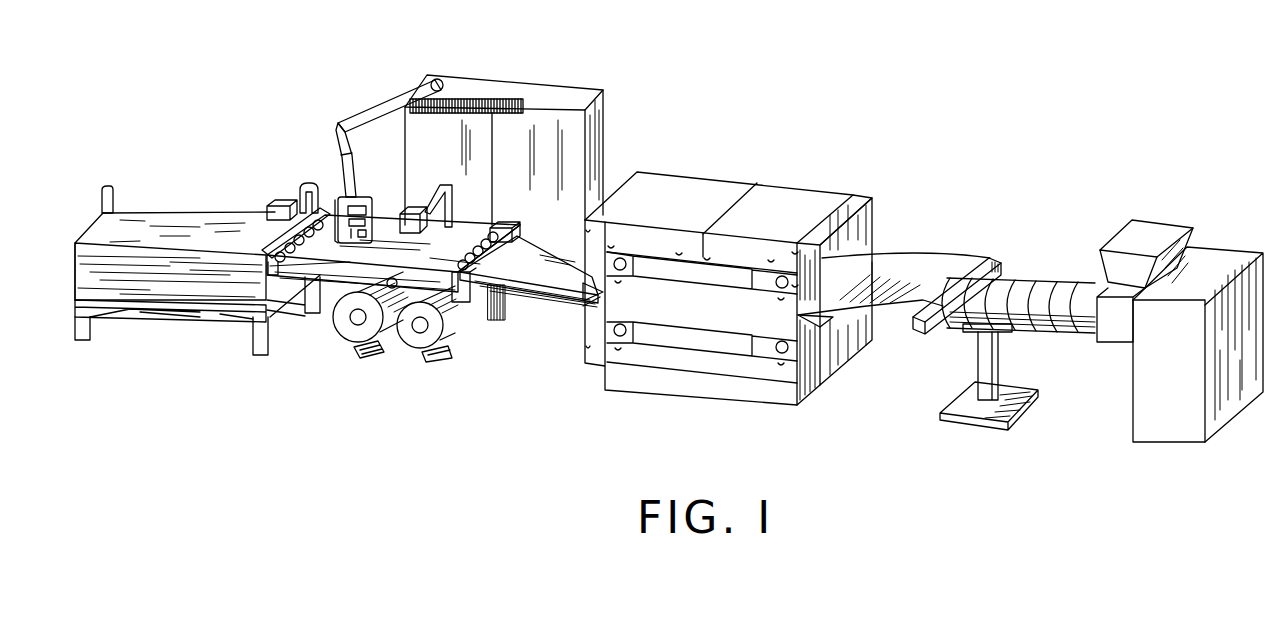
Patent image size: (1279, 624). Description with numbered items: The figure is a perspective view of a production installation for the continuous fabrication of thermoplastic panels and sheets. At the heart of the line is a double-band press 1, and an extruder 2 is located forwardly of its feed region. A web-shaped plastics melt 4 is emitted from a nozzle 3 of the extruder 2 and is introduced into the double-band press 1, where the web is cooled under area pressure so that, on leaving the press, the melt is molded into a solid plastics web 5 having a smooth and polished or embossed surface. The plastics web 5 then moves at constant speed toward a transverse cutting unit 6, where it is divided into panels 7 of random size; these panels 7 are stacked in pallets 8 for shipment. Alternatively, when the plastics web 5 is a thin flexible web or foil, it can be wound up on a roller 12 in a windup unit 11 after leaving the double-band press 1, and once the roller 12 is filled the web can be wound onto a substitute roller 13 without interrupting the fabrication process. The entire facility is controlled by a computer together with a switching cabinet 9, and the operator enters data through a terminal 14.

The double-band press 1 is at (688, 212).
The extruder 2 is at (1035, 300).
The nozzle 3 is at (970, 278).
The web-shaped plastics melt 4 is at (900, 280).
The plastics web 5 is at (533, 265).
The transverse cutting unit 6 is at (320, 203).
The panels 7 is at (162, 228).
The pallets 8 is at (200, 312).
The switching cabinet 9 is at (482, 90).
The windup unit 11 is at (497, 320).
The roller 12 is at (362, 330).
The substitute roller 13 is at (430, 337).
The terminal 14 is at (368, 212).